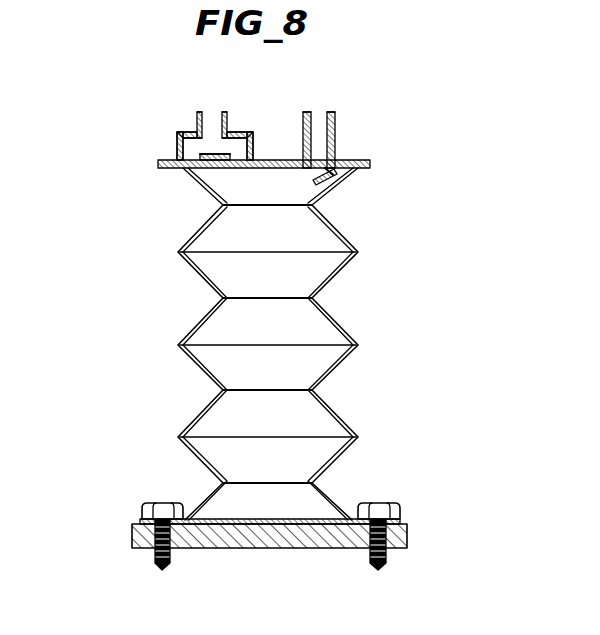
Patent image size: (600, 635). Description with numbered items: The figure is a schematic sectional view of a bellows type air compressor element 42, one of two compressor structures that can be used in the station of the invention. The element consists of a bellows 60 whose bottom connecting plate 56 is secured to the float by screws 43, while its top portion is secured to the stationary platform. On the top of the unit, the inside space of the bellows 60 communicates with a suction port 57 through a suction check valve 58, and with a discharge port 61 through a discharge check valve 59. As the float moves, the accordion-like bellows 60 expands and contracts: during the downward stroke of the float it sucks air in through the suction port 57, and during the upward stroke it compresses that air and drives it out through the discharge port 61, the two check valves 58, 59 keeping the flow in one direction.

The bellows type air compressor element 42 is at (405, 191).
The screws 43 is at (383, 560).
The bottom connecting plate 56 is at (293, 548).
The suction port 57 is at (320, 137).
The suction check valve 58 is at (337, 192).
The discharge check valve 59 is at (212, 156).
The bellows 60 is at (293, 249).
The discharge port 61 is at (215, 112).